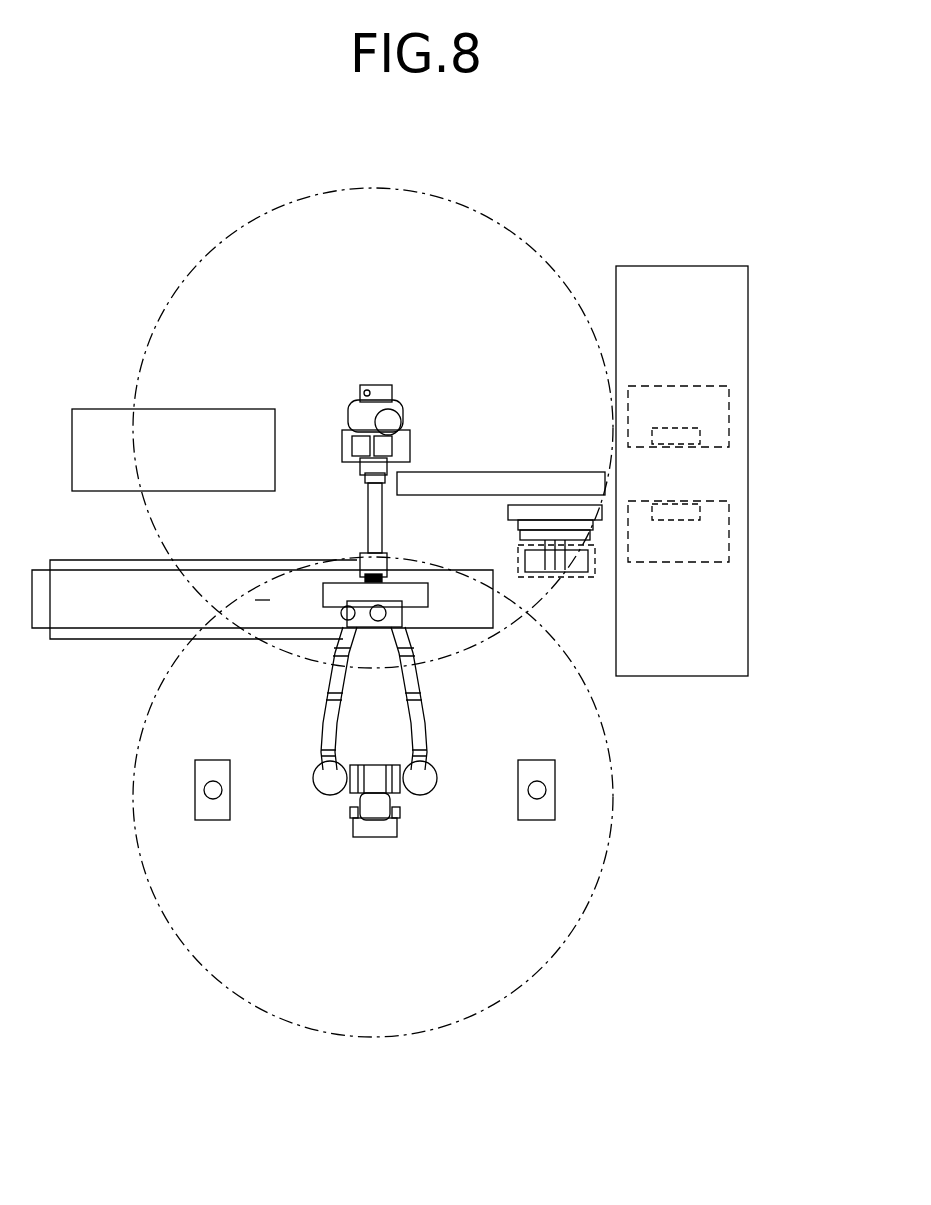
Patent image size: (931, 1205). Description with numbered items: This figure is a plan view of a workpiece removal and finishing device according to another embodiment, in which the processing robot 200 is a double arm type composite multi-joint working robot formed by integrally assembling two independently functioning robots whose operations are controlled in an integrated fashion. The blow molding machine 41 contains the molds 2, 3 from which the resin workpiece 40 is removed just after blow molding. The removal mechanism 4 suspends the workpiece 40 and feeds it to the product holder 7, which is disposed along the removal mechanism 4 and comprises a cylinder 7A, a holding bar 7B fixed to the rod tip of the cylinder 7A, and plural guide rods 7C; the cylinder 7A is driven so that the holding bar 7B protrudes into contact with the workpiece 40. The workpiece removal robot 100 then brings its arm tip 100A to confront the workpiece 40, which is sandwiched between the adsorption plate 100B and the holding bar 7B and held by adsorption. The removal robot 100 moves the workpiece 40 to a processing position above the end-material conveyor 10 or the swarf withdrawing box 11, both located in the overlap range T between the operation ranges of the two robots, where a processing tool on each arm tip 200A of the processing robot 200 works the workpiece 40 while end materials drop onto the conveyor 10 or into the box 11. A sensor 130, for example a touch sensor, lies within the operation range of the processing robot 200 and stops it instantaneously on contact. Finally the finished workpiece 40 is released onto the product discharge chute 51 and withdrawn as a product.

The mold 2 is at (733, 415).
The mold 3 is at (733, 514).
The removal mechanism 4 is at (451, 470).
The product holder 7 is at (536, 480).
The cylinder 7A is at (528, 548).
The holding bar 7B is at (548, 525).
The guide rods 7C is at (578, 570).
The end-material conveyor 10 is at (85, 620).
The swarf withdrawing box 11 is at (456, 580).
The workpiece 40 is at (357, 618).
The blow molding machine 41 is at (755, 327).
The product discharge chute 51 is at (93, 408).
The workpiece removal robot 100 is at (348, 372).
The arm tip 100A is at (365, 557).
The adsorption plate 100B is at (337, 585).
The sensor 130 is at (213, 772).
The processing robot 200 is at (331, 799).
The arm tip 200A is at (337, 655).
The overlap range T is at (262, 598).